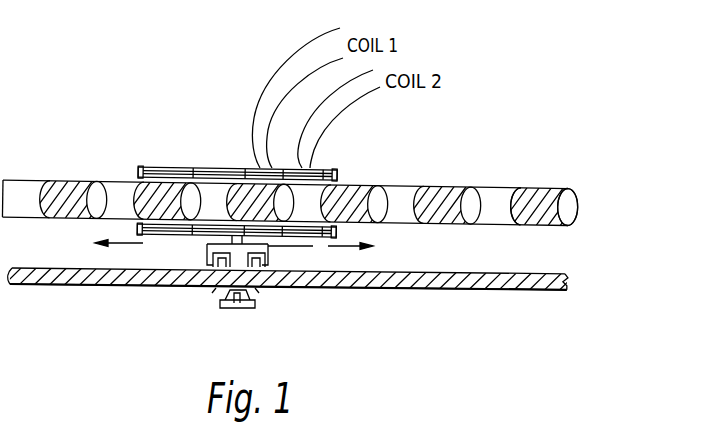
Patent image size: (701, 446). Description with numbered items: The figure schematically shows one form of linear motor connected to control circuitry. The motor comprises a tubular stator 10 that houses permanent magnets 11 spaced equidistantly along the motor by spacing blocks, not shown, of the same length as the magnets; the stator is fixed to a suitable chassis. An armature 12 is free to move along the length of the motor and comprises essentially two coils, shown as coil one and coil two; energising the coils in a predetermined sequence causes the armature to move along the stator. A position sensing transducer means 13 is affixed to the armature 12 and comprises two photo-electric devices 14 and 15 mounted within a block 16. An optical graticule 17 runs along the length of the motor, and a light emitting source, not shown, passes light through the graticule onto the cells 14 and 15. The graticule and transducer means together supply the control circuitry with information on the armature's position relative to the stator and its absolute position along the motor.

The tubular stator 10 is at (570, 210).
The permanent magnets 11 is at (533, 202).
The armature 12 is at (138, 171).
The position sensing transducer means 13 is at (205, 258).
The photo-electric device 14 is at (211, 267).
The photo-electric device 15 is at (257, 268).
The block 16 is at (266, 266).
The optical graticule 17 is at (568, 280).